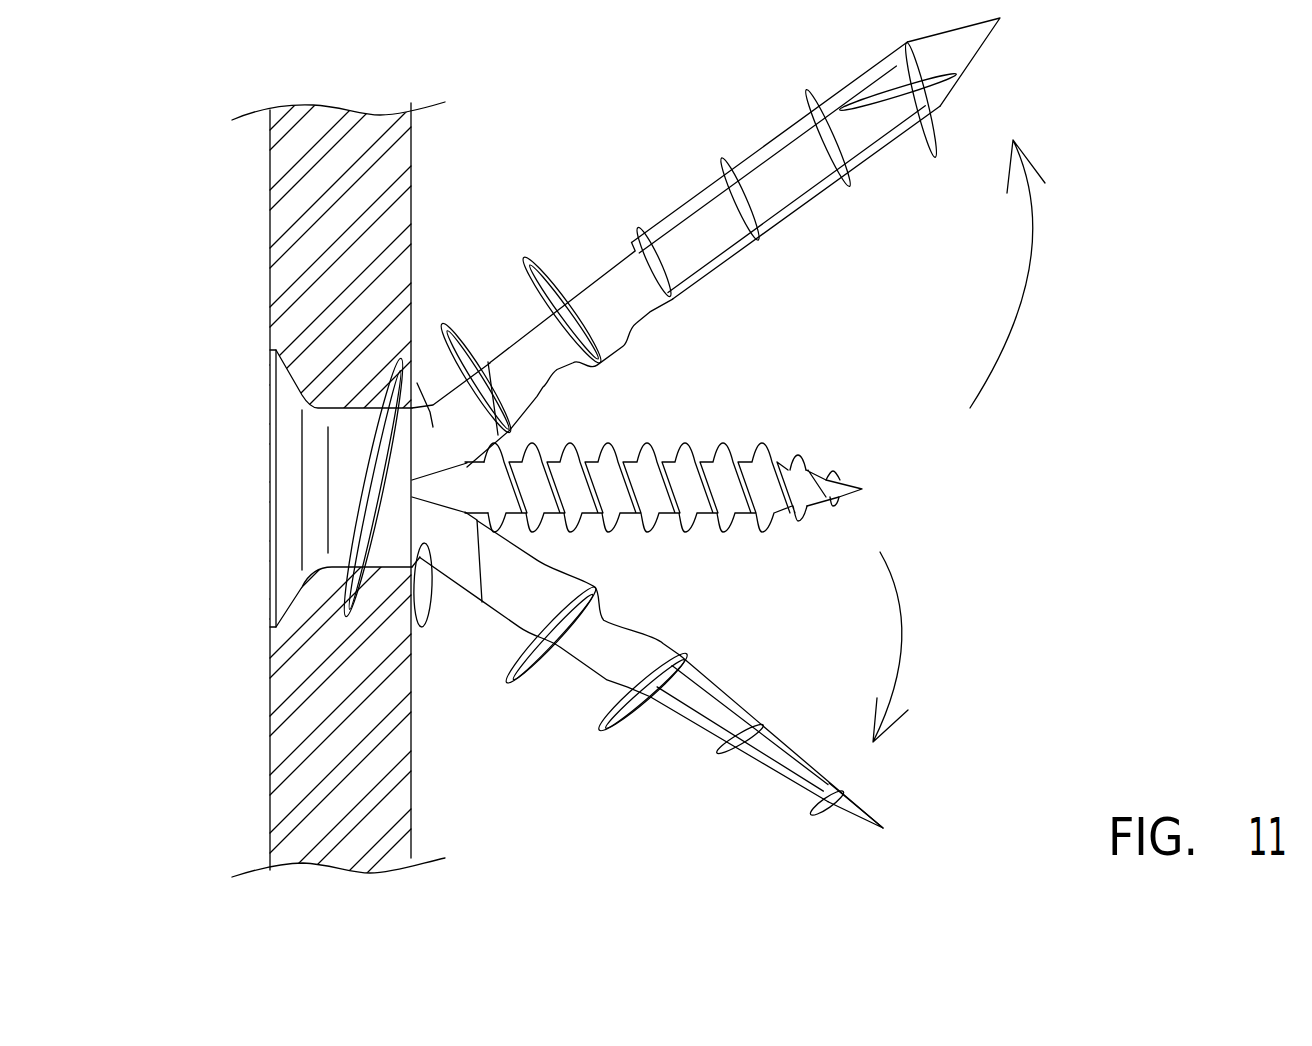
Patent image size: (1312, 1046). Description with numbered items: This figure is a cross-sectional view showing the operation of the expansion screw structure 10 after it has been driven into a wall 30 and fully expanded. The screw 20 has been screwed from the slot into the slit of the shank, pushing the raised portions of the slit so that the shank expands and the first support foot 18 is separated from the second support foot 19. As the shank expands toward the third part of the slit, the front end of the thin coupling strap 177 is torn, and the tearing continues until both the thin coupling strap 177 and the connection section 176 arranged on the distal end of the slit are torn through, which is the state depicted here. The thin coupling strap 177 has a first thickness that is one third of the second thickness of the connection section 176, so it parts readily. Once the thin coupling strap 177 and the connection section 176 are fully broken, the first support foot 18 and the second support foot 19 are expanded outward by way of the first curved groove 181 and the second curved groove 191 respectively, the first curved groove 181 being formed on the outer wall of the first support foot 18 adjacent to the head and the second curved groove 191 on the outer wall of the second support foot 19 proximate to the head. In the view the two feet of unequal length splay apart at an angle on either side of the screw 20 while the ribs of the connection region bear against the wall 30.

The expansion screw structure 10 is at (282, 567).
The first support foot 18 is at (705, 193).
The second support foot 19 is at (700, 723).
The screw 20 is at (725, 458).
The wall 30 is at (401, 795).
The connection section 176 is at (900, 170).
The thin coupling strap 177 is at (817, 217).
The first curved groove 181 is at (455, 412).
The second curved groove 191 is at (472, 593).